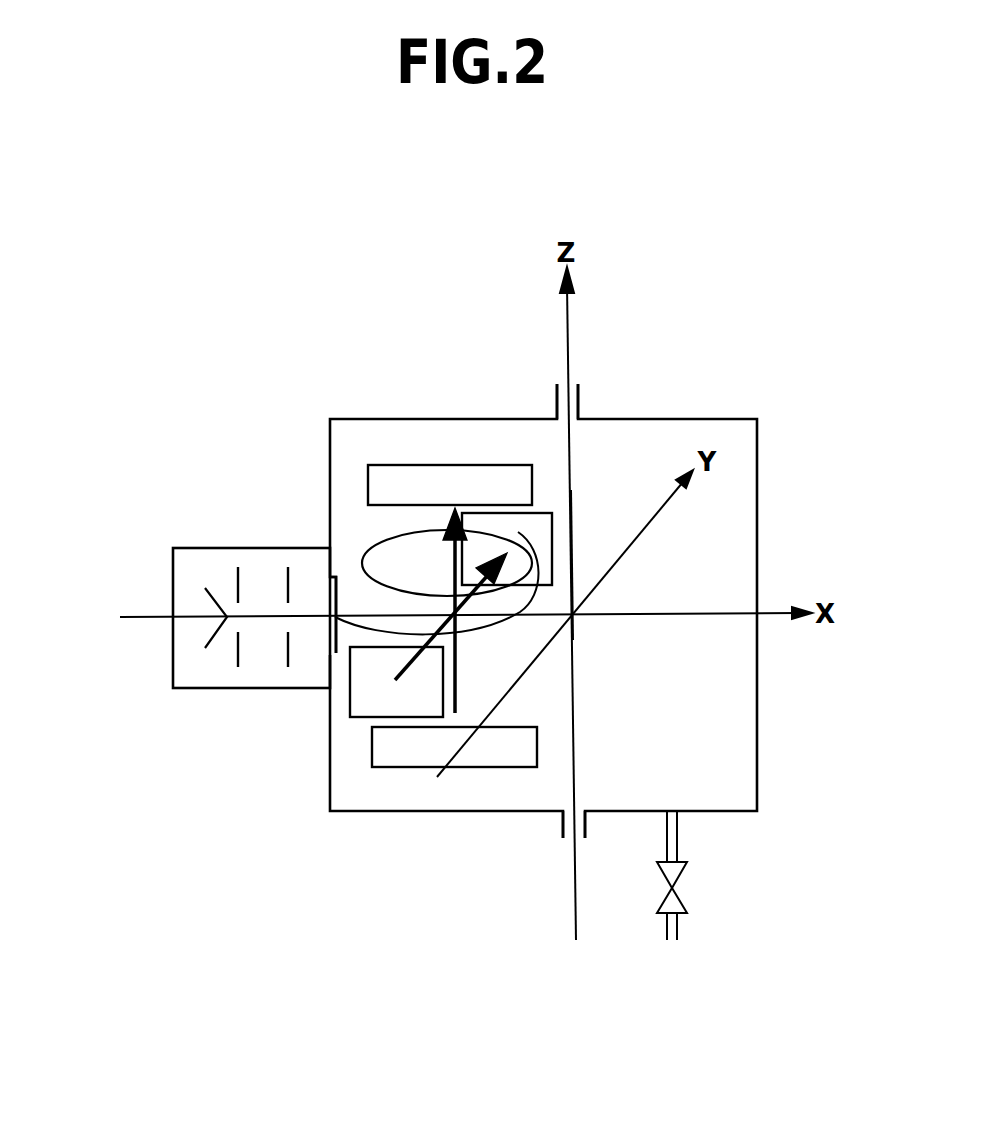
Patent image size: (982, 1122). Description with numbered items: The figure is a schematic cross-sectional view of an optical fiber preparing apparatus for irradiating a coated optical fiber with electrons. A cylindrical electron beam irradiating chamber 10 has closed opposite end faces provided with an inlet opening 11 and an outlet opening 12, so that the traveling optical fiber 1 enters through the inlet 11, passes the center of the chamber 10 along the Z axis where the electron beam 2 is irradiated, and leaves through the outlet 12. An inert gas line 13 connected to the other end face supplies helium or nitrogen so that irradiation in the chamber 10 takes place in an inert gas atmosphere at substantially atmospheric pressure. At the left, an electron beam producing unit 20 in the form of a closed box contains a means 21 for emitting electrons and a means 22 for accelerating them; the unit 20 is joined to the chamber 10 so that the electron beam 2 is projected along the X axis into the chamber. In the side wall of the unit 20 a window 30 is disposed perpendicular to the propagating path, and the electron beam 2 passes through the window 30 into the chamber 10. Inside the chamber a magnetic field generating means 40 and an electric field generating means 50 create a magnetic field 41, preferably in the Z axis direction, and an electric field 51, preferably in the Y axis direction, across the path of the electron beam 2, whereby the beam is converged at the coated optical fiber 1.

The optical fiber 1 is at (572, 490).
The electron beam 2 is at (470, 632).
The electron beam irradiating chamber 10 is at (758, 497).
The inlet opening 11 is at (557, 400).
The outlet opening 12 is at (563, 830).
The inert gas line 13 is at (677, 833).
The electron beam producing unit 20 is at (220, 548).
The means for emitting electrons 21 is at (220, 637).
The means for accelerating the electrons 22 is at (287, 662).
The window 30 is at (332, 598).
The magnetic field generating means 40 is at (387, 463).
The magnetic field 41 is at (453, 560).
The electric field generating means 50 is at (358, 718).
The electric field 51 is at (408, 665).